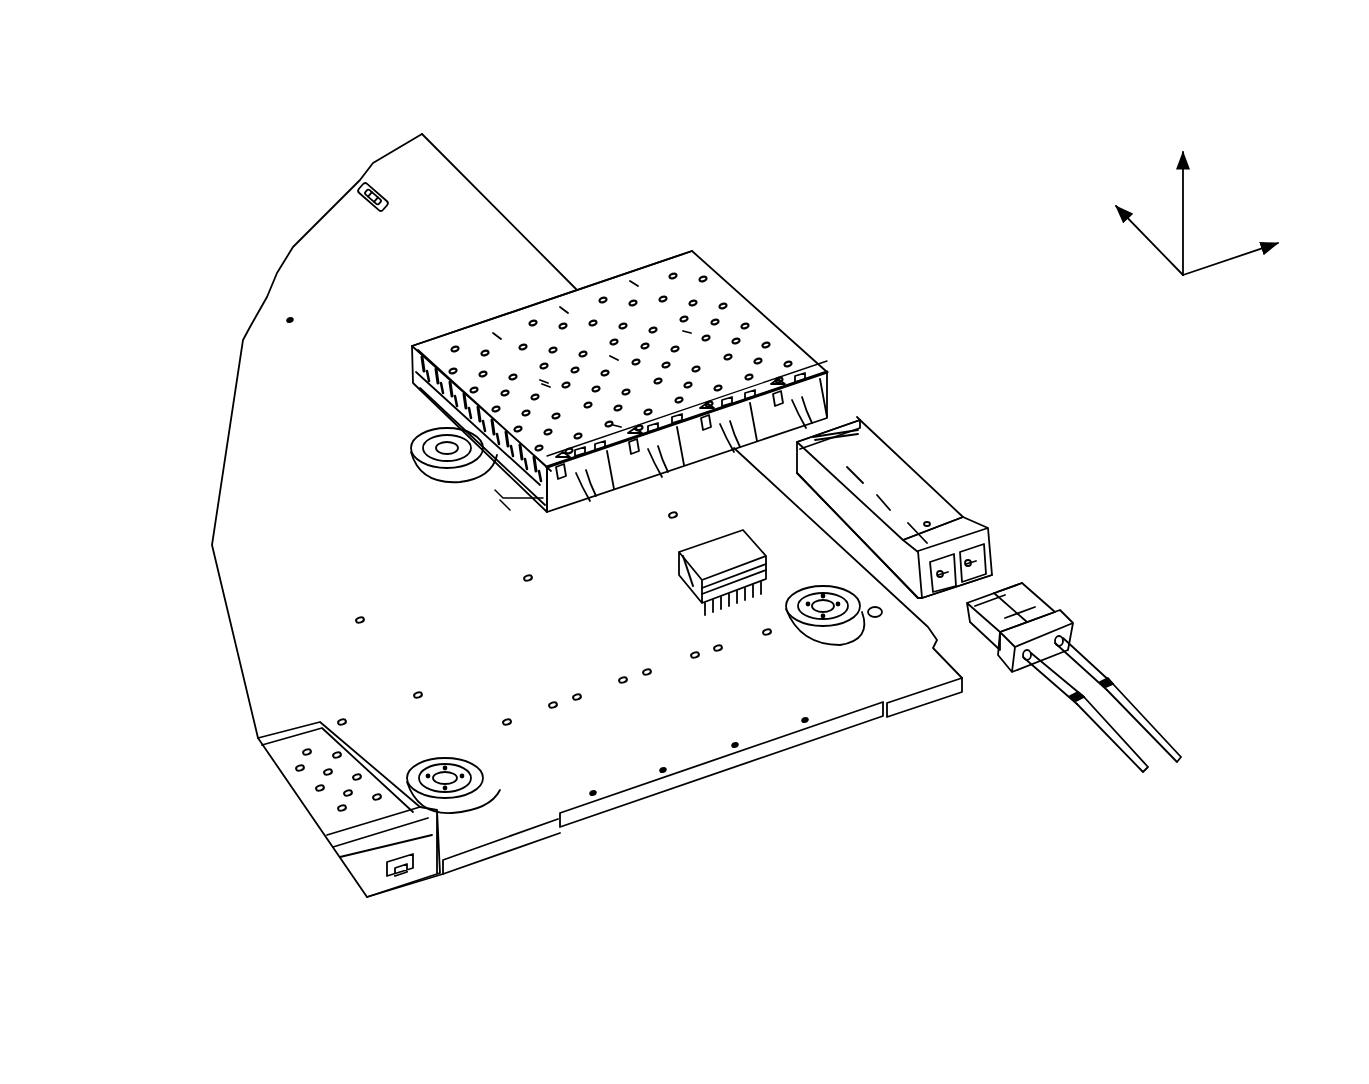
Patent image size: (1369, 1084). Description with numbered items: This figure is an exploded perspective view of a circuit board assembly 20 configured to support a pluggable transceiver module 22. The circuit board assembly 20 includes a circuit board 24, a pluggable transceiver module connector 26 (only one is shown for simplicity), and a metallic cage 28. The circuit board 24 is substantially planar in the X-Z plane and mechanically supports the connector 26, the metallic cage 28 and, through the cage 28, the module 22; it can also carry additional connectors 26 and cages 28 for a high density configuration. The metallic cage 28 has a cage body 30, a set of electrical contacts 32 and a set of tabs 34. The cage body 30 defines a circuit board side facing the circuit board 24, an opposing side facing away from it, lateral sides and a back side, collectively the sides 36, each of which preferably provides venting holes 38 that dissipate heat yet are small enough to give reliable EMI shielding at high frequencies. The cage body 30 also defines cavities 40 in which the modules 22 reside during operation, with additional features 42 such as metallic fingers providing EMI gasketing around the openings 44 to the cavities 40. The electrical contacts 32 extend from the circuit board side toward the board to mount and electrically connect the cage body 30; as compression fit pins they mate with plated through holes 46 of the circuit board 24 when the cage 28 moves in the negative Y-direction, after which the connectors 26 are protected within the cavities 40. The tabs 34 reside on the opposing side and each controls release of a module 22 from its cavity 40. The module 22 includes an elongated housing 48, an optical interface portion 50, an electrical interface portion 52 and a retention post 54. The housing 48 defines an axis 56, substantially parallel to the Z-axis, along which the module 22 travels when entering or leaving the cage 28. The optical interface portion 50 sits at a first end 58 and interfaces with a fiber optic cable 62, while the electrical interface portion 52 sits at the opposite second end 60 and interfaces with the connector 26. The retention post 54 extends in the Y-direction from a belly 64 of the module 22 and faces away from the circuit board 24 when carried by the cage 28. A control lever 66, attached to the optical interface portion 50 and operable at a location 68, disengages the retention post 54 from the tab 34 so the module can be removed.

The circuit board assembly 20 is at (155, 130).
The pluggable transceiver module 22 is at (981, 436).
The circuit board 24 is at (553, 652).
The pluggable transceiver module connector 26 is at (682, 580).
The metallic cage 28 is at (808, 281).
The cage body 30 is at (715, 267).
The electrical contacts 32 is at (496, 515).
The tabs 34 is at (802, 367).
The sides 36 is at (431, 235).
The venting holes 38 is at (654, 277).
The cavities 40 is at (637, 471).
The additional features 42 is at (727, 407).
The openings 44 is at (831, 384).
The plated through holes 46 is at (521, 599).
The elongated housing 48 is at (928, 516).
The optical interface portion 50 is at (992, 536).
The electrical interface portion 52 is at (860, 420).
The retention post 54 is at (938, 501).
The axis 56 is at (975, 590).
The first end 58 is at (911, 593).
The second end 60 is at (806, 486).
The fiber optic cable 62 is at (1121, 625).
The belly 64 is at (896, 509).
The control lever 66 is at (1009, 535).
The location 68 is at (1000, 567).